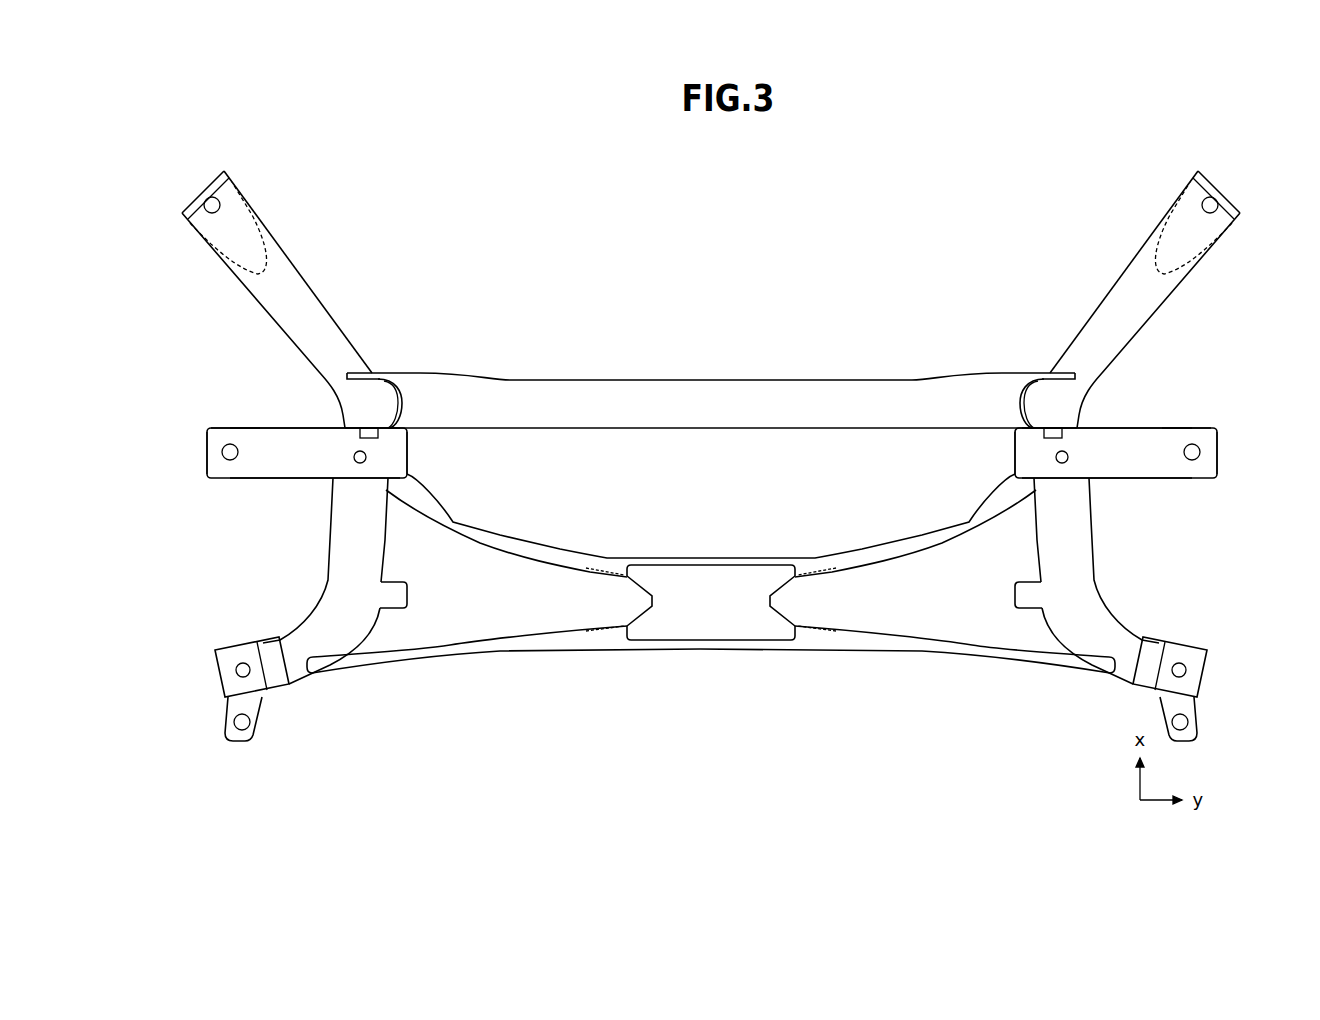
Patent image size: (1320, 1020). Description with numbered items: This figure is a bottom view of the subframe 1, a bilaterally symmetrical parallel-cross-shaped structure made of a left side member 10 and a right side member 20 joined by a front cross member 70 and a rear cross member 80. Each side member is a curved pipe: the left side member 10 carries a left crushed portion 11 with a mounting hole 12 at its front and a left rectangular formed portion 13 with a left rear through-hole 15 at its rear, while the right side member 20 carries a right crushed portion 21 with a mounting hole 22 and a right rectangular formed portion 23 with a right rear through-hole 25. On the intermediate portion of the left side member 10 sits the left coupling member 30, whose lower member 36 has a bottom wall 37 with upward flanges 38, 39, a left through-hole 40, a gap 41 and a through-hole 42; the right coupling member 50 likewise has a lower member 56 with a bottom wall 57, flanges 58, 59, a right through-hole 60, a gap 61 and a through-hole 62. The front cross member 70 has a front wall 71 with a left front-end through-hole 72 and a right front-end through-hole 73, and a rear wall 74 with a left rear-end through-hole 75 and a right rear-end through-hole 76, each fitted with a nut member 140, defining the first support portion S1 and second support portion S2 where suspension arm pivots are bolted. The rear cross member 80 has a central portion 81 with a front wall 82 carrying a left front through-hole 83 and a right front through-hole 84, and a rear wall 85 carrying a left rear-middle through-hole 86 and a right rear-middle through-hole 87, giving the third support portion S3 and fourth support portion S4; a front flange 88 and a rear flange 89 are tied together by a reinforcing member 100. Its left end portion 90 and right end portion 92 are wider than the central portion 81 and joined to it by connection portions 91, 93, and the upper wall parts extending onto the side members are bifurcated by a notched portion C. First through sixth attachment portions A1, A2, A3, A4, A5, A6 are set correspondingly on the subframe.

The subframe 1 is at (760, 235).
The left side member 10 is at (300, 225).
The left crushed portion 11 is at (1215, 180).
The mounting hole 12 is at (1212, 209).
The left rectangular formed portion 13 is at (1200, 635).
The left rear through-hole 15 is at (1182, 672).
The right side member 20 is at (362, 315).
The right crushed portion 21 is at (195, 185).
The mounting hole 22 is at (211, 211).
The right rectangular formed portion 23 is at (210, 637).
The right rear through-hole 25 is at (243, 662).
The left coupling member 30 is at (1222, 455).
The lower member 36 is at (1152, 410).
The bottom wall 37 is at (1140, 465).
The flange 38 is at (1185, 428).
The flange 39 is at (1128, 480).
The left through-hole 40 is at (1195, 455).
The gap 41 is at (1010, 448).
The through-hole 42 is at (1065, 460).
The right coupling member 50 is at (215, 495).
The lower member 56 is at (236, 420).
The bottom wall 57 is at (285, 465).
The flange 58 is at (258, 428).
The flange 59 is at (237, 480).
The right through-hole 60 is at (227, 455).
The gap 61 is at (418, 450).
The through-hole 62 is at (357, 460).
The front cross member 70 is at (635, 330).
The front wall 71 is at (760, 380).
The left front-end through-hole 72 is at (1055, 372).
The right front-end through-hole 73 is at (362, 370).
The rear wall 74 is at (708, 430).
The left rear-end through-hole 75 is at (1060, 420).
The right rear-end through-hole 76 is at (365, 420).
The rear cross member 80 is at (658, 720).
The central portion 81 is at (725, 665).
The front wall 82 is at (535, 560).
The left front through-hole 83 is at (825, 555).
The right front through-hole 84 is at (595, 555).
The rear wall 85 is at (535, 648).
The left rear-middle through-hole 86 is at (815, 632).
The right rear-middle through-hole 87 is at (603, 632).
The front flange 88 is at (805, 558).
The rear flange 89 is at (850, 642).
The left end portion 90 is at (1055, 688).
The connection portion 91 is at (945, 672).
The right end portion 92 is at (368, 688).
The connection portion 93 is at (490, 668).
The reinforcing member 100 is at (750, 630).
The nut member 140 is at (365, 437).
The first attachment portion A1 is at (1235, 197).
The second attachment portion A2 is at (1208, 710).
The third attachment portion A3 is at (1240, 392).
The fourth attachment portion A4 is at (237, 183).
The fifth attachment portion A5 is at (215, 670).
The sixth attachment portion A6 is at (196, 440).
The notched portion C is at (383, 590).
The first support portion S1 is at (1040, 398).
The second support portion S2 is at (405, 357).
The third support portion S3 is at (797, 605).
The fourth support portion S4 is at (628, 605).